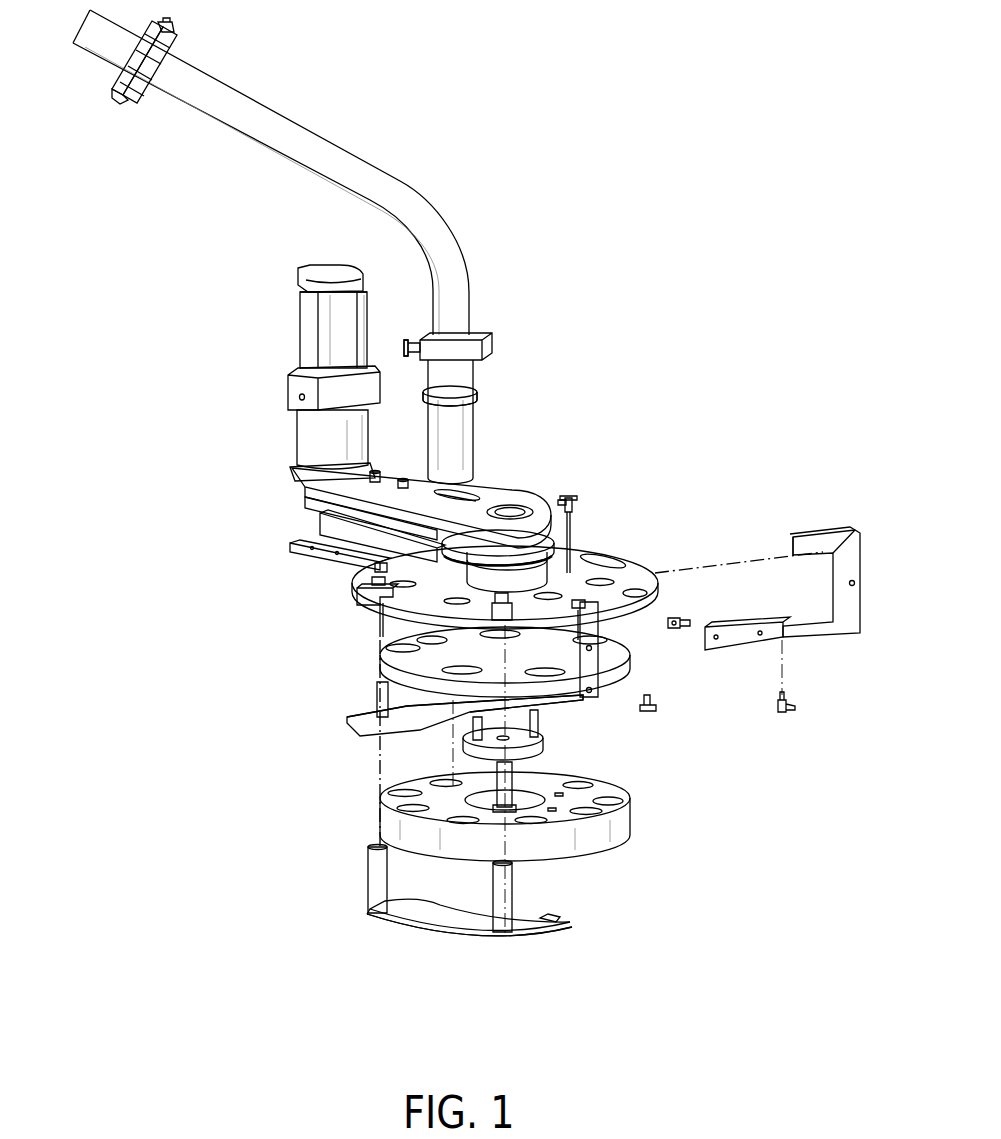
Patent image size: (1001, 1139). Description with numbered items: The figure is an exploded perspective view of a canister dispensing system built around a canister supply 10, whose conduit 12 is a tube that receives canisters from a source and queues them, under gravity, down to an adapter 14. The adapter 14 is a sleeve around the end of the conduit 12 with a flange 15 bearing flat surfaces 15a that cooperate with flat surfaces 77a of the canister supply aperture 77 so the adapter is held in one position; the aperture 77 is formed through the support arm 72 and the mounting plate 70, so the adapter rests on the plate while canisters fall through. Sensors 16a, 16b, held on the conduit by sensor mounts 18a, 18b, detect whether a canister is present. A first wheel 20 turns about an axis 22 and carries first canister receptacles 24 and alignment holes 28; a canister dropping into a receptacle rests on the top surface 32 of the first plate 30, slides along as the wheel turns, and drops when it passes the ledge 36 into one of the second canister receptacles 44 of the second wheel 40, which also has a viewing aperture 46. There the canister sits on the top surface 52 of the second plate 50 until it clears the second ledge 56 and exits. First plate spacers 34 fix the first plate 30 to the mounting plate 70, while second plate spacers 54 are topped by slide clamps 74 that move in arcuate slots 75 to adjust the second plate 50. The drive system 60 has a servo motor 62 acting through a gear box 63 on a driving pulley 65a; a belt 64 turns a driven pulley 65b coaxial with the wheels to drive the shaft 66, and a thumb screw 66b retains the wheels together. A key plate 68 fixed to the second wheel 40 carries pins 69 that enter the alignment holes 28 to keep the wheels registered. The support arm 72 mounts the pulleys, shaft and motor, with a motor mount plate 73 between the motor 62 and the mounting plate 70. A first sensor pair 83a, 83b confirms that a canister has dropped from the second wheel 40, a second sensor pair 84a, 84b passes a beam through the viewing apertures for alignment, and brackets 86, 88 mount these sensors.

The canister supply 10 is at (441, 90).
The conduit 12 is at (460, 243).
The adapter 14 is at (474, 428).
The flange 15 is at (472, 384).
The flat surfaces 15a is at (470, 392).
The sensor 16a is at (130, 104).
The sensor 16b is at (410, 347).
The sensor mount 18a is at (146, 103).
The sensor mount 18b is at (508, 285).
The first wheel 20 is at (248, 689).
The axis 22 is at (380, 633).
The first wheel canister receptacles 24 is at (378, 670).
The alignment holes 28 is at (658, 572).
The first plate 30 is at (356, 730).
The top surface 32 is at (373, 731).
The first plate spacers 34 is at (376, 700).
The ledge 36 is at (430, 735).
The second wheel 40 is at (620, 845).
The second canister receptacles 44 is at (608, 800).
The viewing aperture 46 is at (553, 811).
The second plate 50 is at (410, 932).
The top surface 52 is at (457, 928).
The second plate spacers 54 is at (368, 881).
The second ledge 56 is at (568, 924).
The drive system 60 is at (103, 369).
The servo motor 62 is at (297, 312).
The gear box 63 is at (297, 428).
The belt 64 is at (340, 516).
The driving pulley 65a is at (302, 487).
The driven pulley 65b is at (603, 557).
The shaft 66 is at (558, 535).
The thumb screw 66b is at (516, 770).
The key plate 68 is at (545, 742).
The pins 69 is at (540, 728).
The mounting plate 70 is at (307, 558).
The support arm 72 is at (505, 494).
The motor mount plate 73 is at (290, 467).
The slide clamp 74 is at (345, 592).
The arcuate slots 75 is at (615, 596).
The canister supply aperture 77 is at (340, 521).
The flat surfaces 77a is at (455, 482).
The first sensor pair sensor 83a is at (737, 622).
The first sensor pair sensor 83b is at (652, 707).
The second sensor pair sensor 84a is at (575, 498).
The second sensor pair sensor 84b is at (790, 715).
The bracket 86 is at (861, 634).
The bracket 88 is at (683, 620).